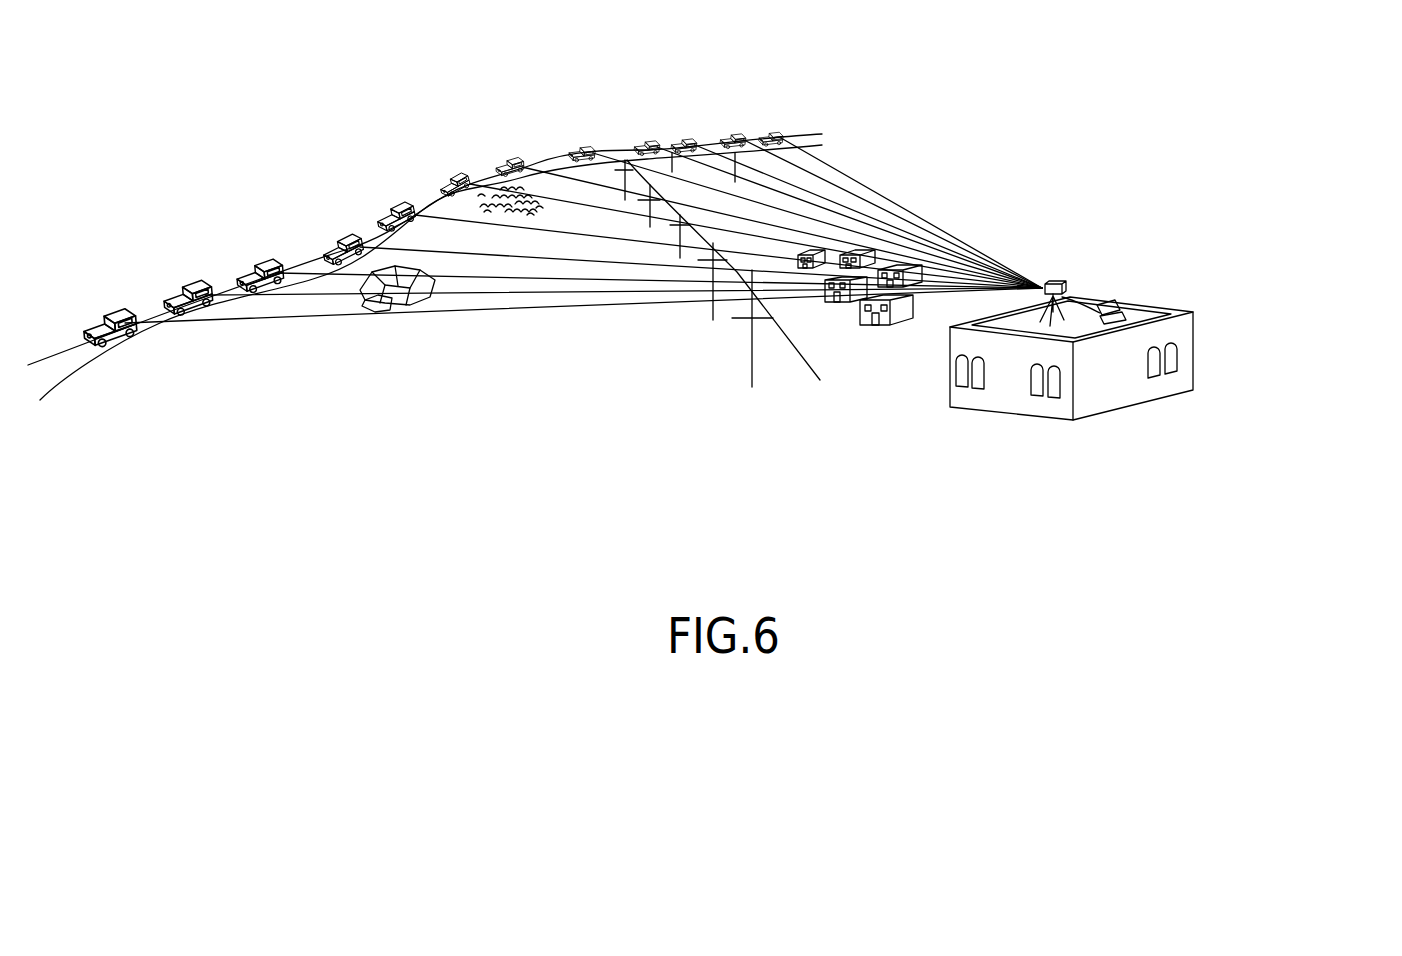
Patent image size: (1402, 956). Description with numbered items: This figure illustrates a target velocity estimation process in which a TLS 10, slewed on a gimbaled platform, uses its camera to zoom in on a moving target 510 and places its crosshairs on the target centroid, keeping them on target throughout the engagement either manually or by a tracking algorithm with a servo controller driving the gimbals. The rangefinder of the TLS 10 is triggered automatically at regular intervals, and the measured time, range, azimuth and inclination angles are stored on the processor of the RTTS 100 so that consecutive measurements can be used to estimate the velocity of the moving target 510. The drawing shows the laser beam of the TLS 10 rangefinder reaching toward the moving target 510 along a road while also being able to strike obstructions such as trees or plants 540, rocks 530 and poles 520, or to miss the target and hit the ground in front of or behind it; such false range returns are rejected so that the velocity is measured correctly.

The TLS 10 is at (1104, 351).
The RTTS 100 is at (1117, 303).
The moving target 510 is at (105, 312).
The poles 520 is at (750, 340).
The rocks 530 is at (365, 303).
The trees/plants 540 is at (493, 195).